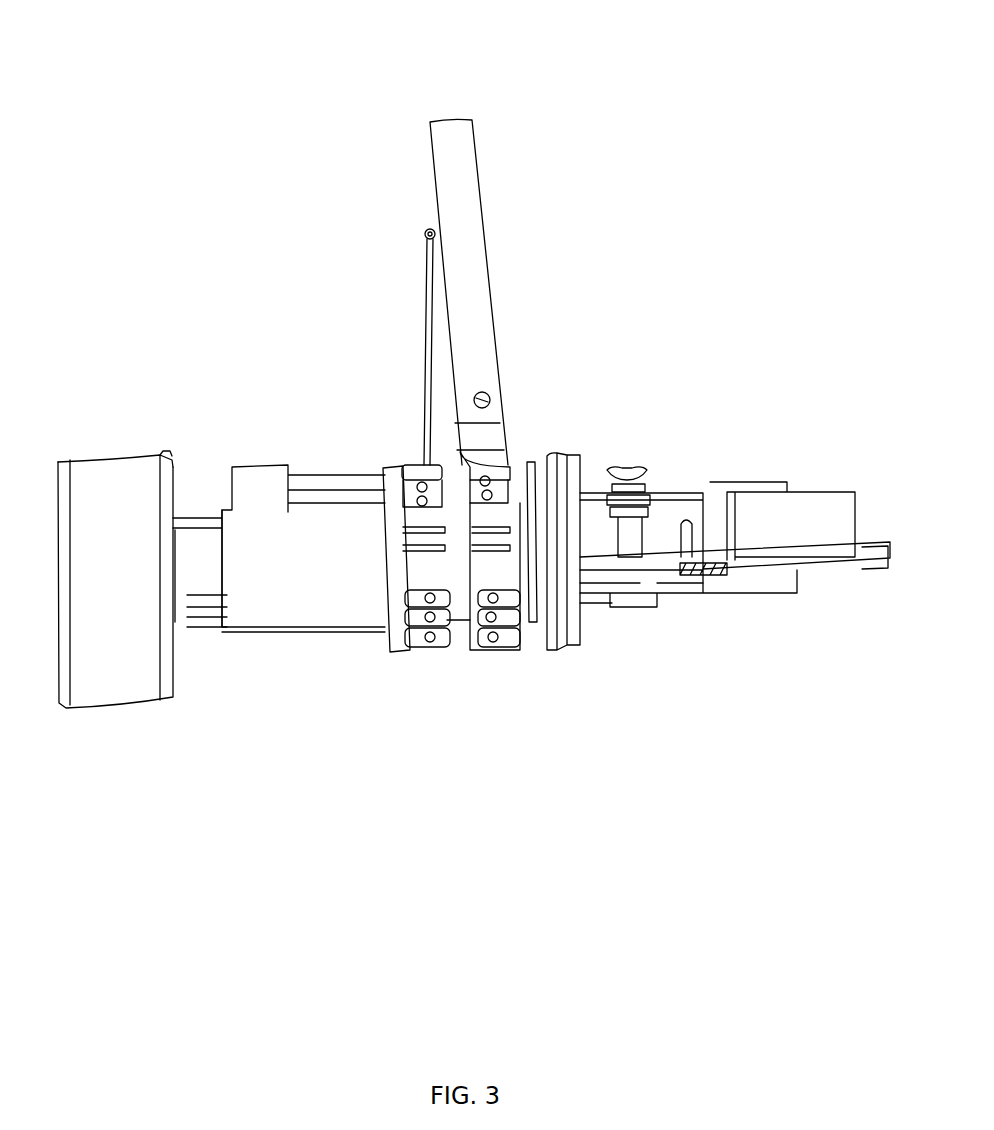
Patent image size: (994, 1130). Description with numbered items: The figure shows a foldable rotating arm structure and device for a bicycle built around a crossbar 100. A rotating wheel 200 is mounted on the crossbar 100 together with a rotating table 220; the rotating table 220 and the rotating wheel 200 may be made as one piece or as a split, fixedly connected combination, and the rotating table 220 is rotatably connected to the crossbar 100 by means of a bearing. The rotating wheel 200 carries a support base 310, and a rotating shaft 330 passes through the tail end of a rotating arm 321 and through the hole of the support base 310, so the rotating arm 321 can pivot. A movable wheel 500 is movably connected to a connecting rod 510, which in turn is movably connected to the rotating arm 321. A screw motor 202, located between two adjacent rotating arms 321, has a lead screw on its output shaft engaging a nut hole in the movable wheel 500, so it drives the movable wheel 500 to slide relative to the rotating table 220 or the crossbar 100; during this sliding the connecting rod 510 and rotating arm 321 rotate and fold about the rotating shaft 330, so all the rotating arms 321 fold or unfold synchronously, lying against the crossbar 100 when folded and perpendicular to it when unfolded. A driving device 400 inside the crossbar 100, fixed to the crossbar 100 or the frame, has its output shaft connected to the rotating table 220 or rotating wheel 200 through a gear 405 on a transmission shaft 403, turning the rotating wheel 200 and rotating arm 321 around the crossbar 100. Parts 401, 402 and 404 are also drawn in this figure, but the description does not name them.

The crossbar 100 is at (187, 530).
The rotating wheel 200 is at (520, 490).
The screw motor 202 is at (263, 495).
The rotating table 220 is at (557, 460).
The support base 310 is at (497, 498).
The rotating arm 321 is at (455, 188).
The rotating shaft 330 is at (487, 466).
The driving device 400 is at (795, 512).
The guide rod 401 is at (690, 565).
The slider 402 is at (667, 557).
The transmission shaft 403 is at (628, 537).
The washer stack 404 is at (620, 505).
The gear 405 is at (625, 468).
The movable wheel 500 is at (390, 488).
The connecting rod 510 is at (425, 322).